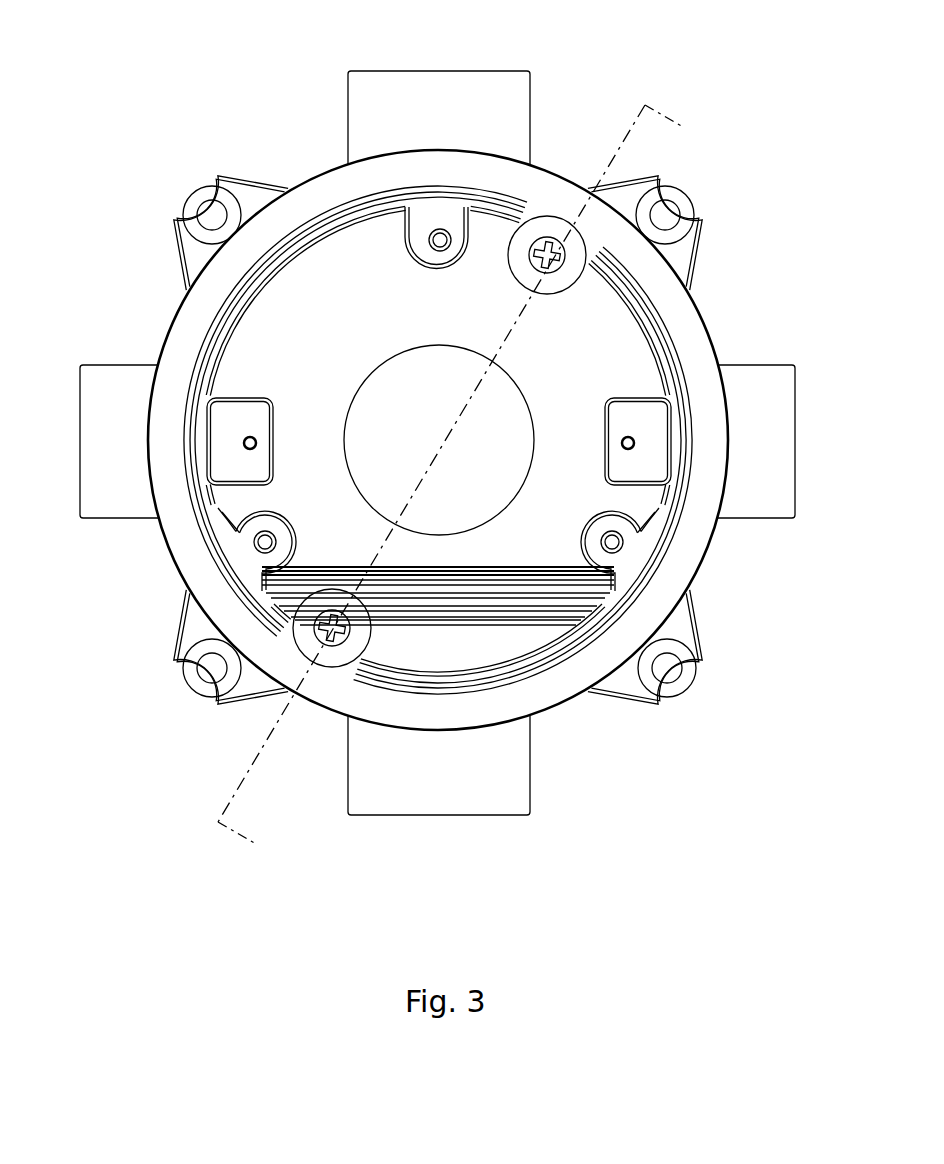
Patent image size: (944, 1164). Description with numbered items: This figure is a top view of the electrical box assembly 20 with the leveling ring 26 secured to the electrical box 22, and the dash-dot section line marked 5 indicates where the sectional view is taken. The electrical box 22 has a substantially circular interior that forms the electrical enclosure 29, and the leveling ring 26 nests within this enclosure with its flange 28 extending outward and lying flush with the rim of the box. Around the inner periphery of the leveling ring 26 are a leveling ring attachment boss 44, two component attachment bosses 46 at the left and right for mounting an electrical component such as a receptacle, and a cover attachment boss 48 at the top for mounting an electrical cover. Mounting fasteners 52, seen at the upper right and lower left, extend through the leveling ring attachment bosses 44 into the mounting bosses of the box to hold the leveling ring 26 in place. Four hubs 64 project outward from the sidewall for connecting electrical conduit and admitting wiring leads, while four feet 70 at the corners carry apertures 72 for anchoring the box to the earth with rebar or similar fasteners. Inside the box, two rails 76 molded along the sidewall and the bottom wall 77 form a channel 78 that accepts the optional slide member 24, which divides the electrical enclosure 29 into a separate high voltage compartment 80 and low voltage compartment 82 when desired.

The electrical box assembly 20 is at (212, 102).
The electrical box 22 is at (743, 550).
The slide member 24 is at (325, 590).
The leveling ring 26 is at (183, 322).
The flange 28 is at (183, 545).
The electrical enclosure 29 is at (600, 368).
The leveling ring attachment boss 44 is at (556, 290).
The component attachment boss 46 is at (240, 398).
The cover attachment boss 48 is at (440, 275).
The mounting fastener 52 is at (548, 240).
The hub 64 is at (445, 818).
The foot 70 is at (713, 630).
The aperture 72 is at (666, 672).
The rail 76 is at (488, 570).
The bottom wall 77 is at (418, 563).
The channel 78 is at (540, 602).
The high voltage compartment 80 is at (488, 473).
The low voltage compartment 82 is at (450, 651).
The section line 5- 5 is at (448, 483).